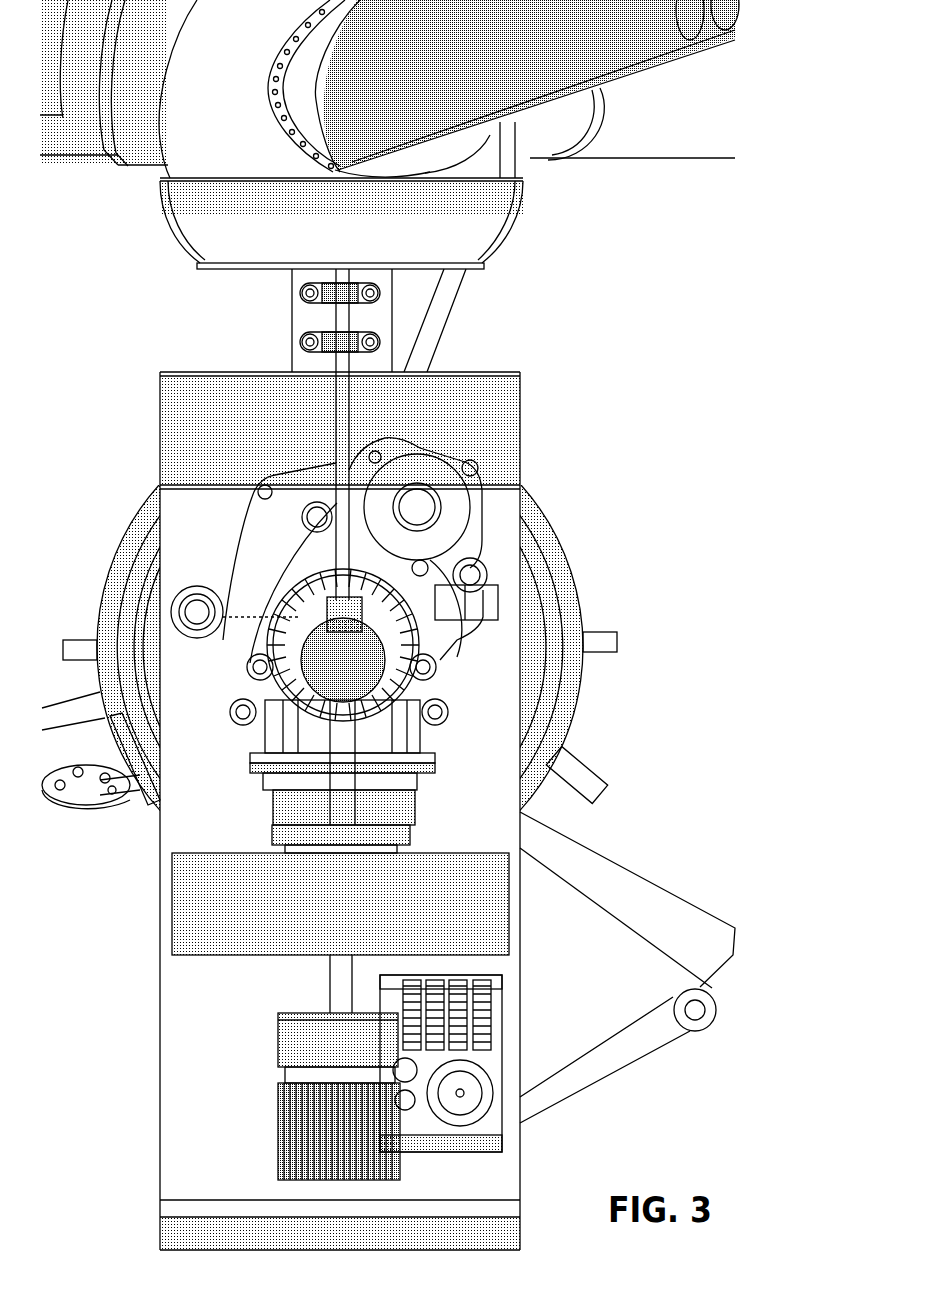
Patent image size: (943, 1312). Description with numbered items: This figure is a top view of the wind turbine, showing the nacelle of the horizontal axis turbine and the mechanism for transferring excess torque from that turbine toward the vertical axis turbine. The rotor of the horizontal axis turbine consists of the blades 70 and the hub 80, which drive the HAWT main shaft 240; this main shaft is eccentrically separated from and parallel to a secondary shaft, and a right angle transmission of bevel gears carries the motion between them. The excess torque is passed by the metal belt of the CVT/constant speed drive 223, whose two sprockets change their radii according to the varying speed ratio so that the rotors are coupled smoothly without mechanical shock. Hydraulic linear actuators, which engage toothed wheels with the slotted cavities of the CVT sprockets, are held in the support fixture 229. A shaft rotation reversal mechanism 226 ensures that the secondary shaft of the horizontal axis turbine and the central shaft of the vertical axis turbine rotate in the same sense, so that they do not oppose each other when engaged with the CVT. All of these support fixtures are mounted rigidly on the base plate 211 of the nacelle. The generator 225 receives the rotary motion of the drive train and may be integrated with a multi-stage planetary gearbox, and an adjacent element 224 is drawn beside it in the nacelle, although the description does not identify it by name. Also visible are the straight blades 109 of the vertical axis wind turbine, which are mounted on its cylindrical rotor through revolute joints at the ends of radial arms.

The blades 70 is at (673, 103).
The hub 80 is at (452, 235).
The HAWT main shaft 240 is at (350, 530).
The shaft rotation reversal mechanism 226 is at (343, 667).
The support fixture 229 is at (455, 770).
The base plate 211 is at (512, 835).
The CVT/constant speed drive 223 is at (500, 948).
The control box 224 is at (493, 1038).
The generator 225 is at (287, 1038).
The straight blades 109 is at (652, 1040).